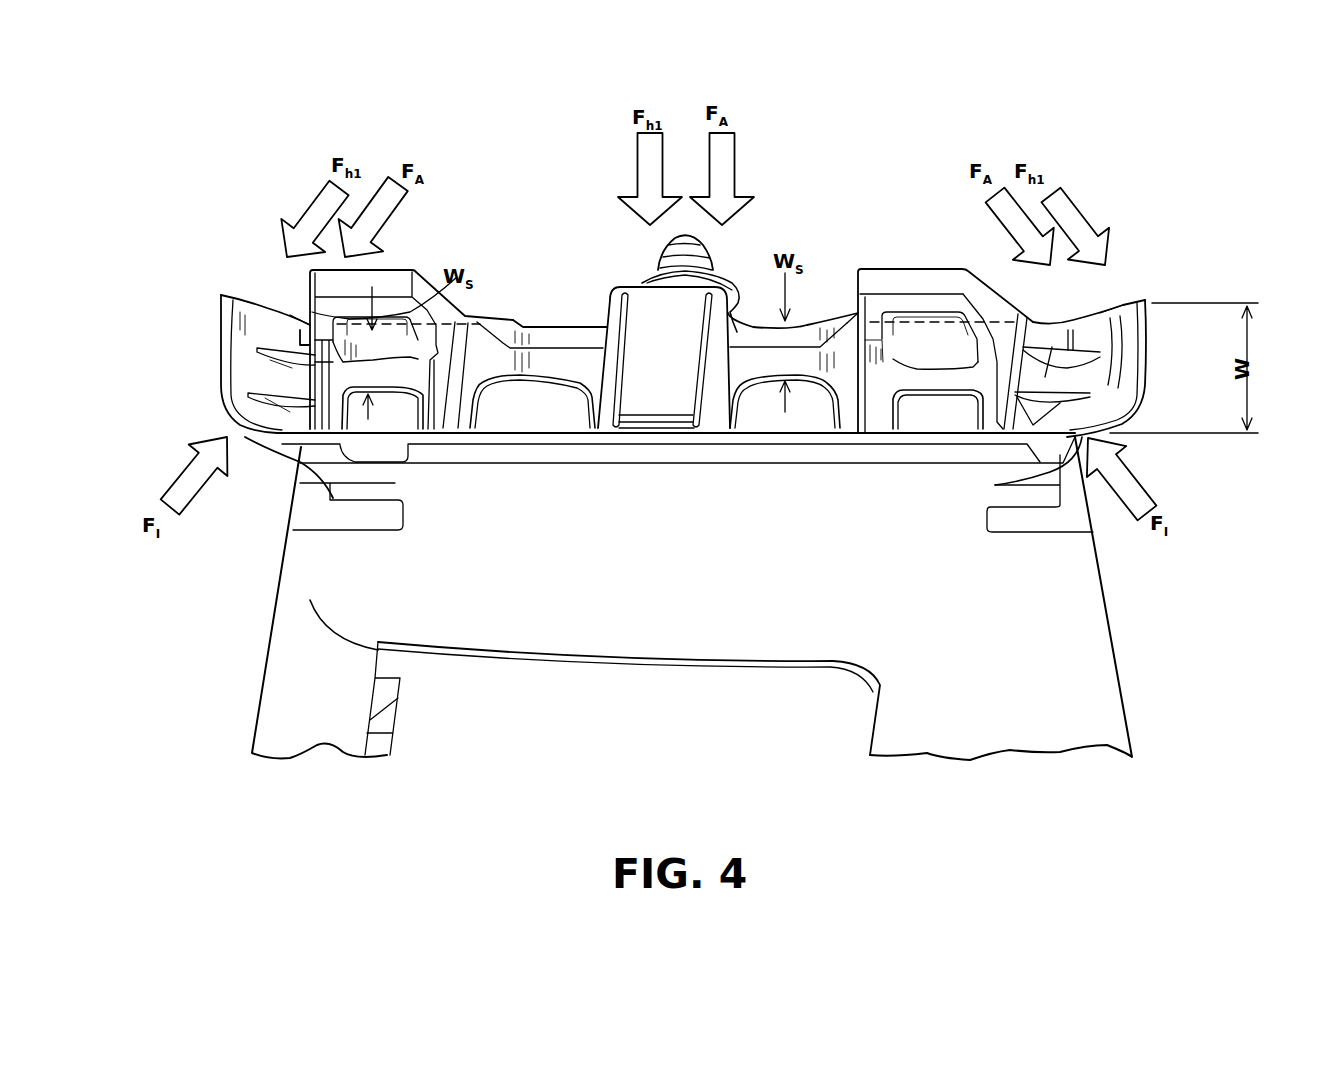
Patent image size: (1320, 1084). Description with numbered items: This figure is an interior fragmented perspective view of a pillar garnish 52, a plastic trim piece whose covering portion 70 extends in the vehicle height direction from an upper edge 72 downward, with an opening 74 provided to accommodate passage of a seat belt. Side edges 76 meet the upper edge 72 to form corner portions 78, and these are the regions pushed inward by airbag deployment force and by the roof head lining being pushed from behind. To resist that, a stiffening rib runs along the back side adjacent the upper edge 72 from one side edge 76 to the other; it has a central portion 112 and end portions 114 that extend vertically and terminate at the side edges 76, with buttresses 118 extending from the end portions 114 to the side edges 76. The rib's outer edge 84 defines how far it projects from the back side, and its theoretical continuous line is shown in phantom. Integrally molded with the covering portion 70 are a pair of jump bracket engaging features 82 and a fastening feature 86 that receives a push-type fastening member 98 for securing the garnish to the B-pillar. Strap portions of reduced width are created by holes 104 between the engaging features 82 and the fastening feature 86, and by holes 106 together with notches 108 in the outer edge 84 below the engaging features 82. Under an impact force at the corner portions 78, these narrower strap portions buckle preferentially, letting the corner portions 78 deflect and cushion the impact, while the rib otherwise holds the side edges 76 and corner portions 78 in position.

The pillar garnish 52 is at (1097, 700).
The covering portion 70 is at (605, 627).
The upper edge 72 is at (243, 440).
The opening 74 is at (537, 700).
The side edges 76 is at (310, 325).
The corner portions 78 is at (225, 300).
The jump bracket engaging features 82 is at (383, 278).
The outer edge 84 is at (558, 327).
The fastening feature 86 is at (648, 303).
The fastening member 98 is at (695, 252).
The holes 104 is at (562, 414).
The holes 106 is at (389, 422).
The notches 108 is at (408, 338).
The central portion 112 is at (838, 277).
The end portions 114 is at (303, 294).
The buttresses 118 is at (287, 410).